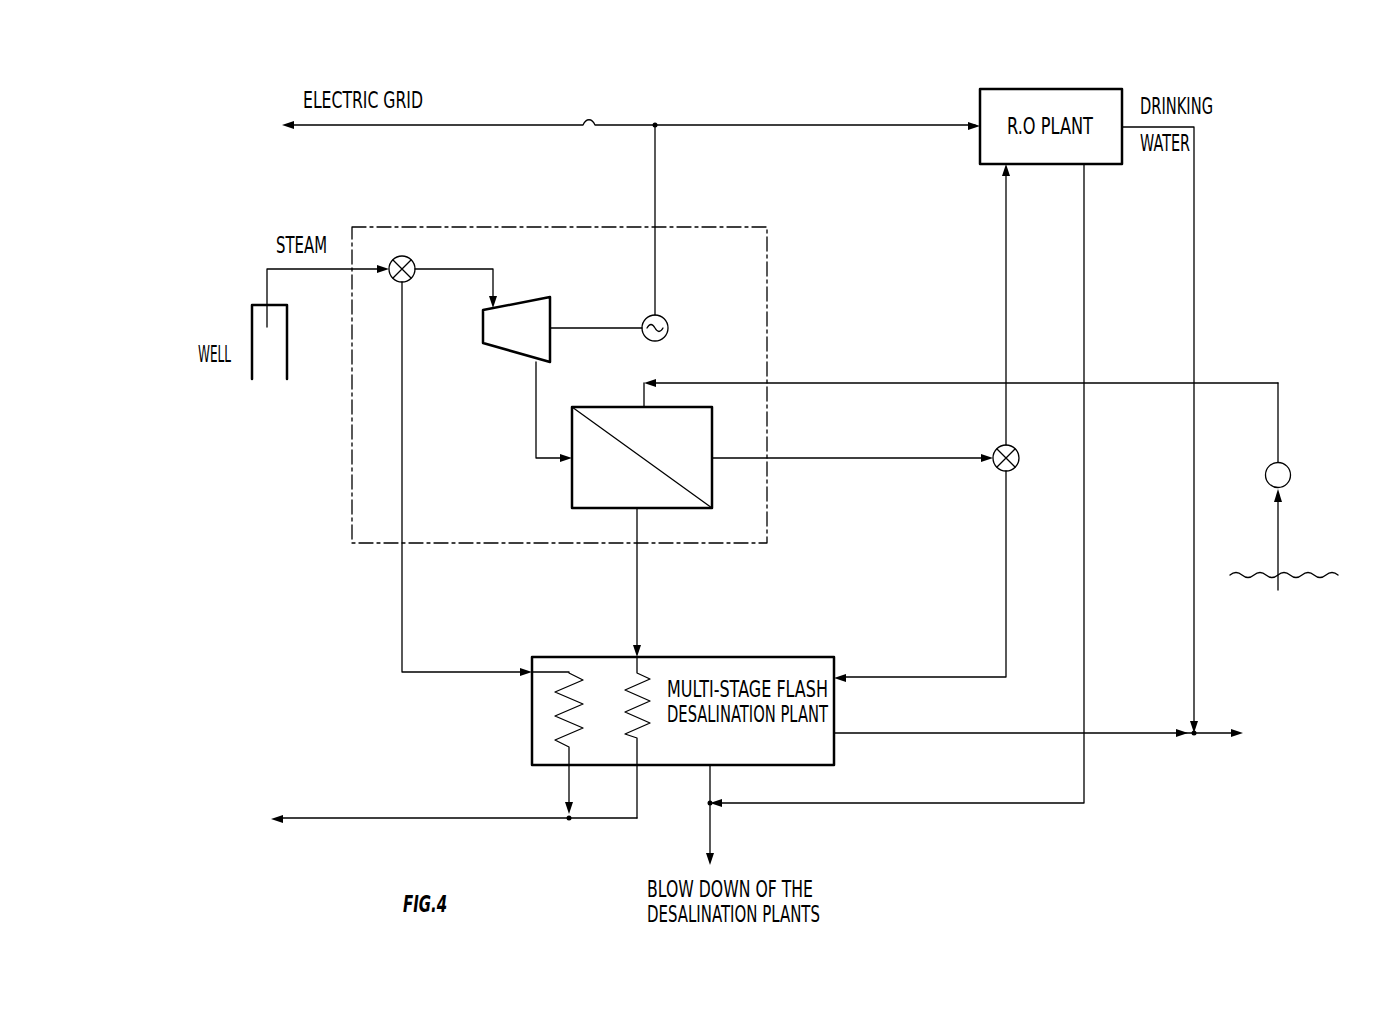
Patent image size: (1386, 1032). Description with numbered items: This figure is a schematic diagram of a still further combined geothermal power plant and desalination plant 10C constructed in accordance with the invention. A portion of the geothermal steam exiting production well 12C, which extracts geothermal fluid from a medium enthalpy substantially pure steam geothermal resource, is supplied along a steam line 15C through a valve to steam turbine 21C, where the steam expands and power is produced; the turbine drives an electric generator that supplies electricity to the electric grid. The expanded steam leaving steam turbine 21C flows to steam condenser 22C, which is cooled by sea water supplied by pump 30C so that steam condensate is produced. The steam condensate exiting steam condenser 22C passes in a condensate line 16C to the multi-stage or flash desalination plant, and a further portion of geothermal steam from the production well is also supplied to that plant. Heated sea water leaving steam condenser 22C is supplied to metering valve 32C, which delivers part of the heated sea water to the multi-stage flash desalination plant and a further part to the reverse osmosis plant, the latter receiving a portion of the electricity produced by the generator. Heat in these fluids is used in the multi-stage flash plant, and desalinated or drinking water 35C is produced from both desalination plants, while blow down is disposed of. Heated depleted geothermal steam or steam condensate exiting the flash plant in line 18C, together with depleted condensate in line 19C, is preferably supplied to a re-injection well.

The combined geothermal power plant and desalination plant 10C is at (278, 68).
The production well 12C is at (280, 305).
The geothermal fluid line to desalination plant 15C is at (425, 672).
The condensate line from condenser 16C is at (639, 575).
The line 18C is at (568, 777).
The condensate return line 19C is at (637, 777).
The steam turbine 21C is at (538, 297).
The steam condenser 22C is at (577, 407).
The pump 30C is at (1265, 473).
The metering valve 32C is at (1015, 447).
The drinking water 35C is at (1205, 737).